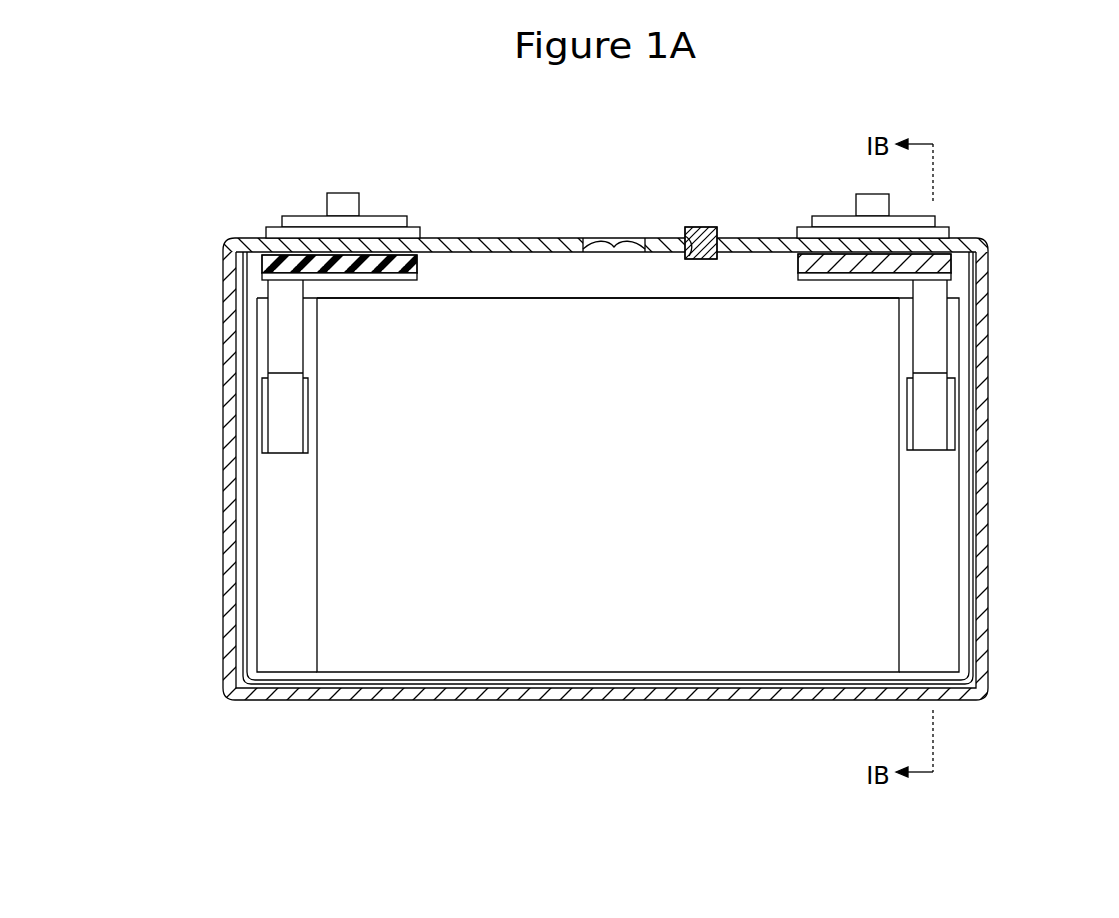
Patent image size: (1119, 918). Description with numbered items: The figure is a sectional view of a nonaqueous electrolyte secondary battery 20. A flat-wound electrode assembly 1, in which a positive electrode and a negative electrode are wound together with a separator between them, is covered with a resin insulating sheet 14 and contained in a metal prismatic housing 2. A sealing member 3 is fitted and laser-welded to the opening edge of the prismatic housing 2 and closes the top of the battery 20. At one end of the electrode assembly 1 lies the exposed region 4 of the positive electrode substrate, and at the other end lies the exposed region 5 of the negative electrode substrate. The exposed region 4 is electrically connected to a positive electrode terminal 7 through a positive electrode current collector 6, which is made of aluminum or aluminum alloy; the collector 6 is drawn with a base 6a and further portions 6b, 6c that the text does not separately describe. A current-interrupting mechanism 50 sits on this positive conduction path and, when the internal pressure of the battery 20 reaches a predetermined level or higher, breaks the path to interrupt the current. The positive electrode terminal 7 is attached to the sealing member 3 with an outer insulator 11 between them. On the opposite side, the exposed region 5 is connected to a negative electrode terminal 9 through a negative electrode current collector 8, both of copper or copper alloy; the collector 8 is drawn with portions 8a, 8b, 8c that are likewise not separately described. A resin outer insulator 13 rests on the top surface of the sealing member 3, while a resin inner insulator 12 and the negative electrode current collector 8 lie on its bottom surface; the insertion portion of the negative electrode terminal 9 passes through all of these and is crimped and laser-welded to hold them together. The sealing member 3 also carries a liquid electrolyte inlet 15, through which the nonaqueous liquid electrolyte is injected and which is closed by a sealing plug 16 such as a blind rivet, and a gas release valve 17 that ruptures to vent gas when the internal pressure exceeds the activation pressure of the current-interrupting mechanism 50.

The nonaqueous electrolyte secondary battery 20 is at (491, 106).
The flat-wound electrode assembly 1 is at (556, 668).
The prismatic housing 2 is at (830, 702).
The sealing member 3 is at (497, 243).
The exposed region of the positive electrode substrate 4 is at (945, 660).
The exposed region of the negative electrode substrate 5 is at (275, 660).
The positive electrode current collector 6 is at (1076, 282).
The base 6a is at (940, 278).
The lead second portion 6b is at (935, 330).
The lead third portion 6c is at (935, 405).
The positive electrode terminal 7 is at (868, 201).
The negative electrode current collector 8 is at (145, 273).
The lead first portion 8a is at (265, 277).
The lead second portion 8b is at (283, 333).
The lead third portion 8c is at (280, 408).
The negative electrode terminal 9 is at (345, 203).
The outer insulator 11 is at (797, 230).
The inner insulator 12 is at (275, 262).
The outer insulator 13 is at (270, 231).
The resin insulating sheet 14 is at (240, 600).
The liquid electrolyte inlet 15 is at (690, 234).
The sealing plug 16 is at (700, 238).
The gas release valve 17 is at (613, 246).
The current-interrupting mechanism 50 is at (940, 262).